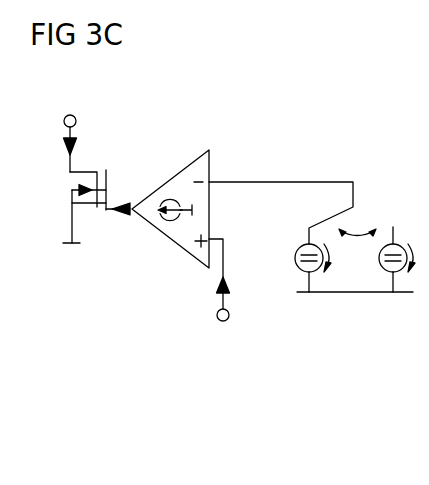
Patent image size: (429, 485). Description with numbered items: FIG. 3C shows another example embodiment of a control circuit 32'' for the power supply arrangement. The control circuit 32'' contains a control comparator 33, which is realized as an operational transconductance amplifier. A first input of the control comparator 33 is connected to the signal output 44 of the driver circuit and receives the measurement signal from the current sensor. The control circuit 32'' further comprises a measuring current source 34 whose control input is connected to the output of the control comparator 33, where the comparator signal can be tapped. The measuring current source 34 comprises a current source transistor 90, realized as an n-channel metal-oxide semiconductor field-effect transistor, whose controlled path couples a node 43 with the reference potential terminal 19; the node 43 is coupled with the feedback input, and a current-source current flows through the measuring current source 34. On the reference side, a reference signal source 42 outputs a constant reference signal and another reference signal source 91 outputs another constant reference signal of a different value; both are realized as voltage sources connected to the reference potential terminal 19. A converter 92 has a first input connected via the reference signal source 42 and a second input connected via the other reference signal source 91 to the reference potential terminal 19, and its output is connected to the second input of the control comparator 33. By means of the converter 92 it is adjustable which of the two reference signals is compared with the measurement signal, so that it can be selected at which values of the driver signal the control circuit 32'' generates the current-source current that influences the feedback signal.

The reference potential terminal 19 is at (66, 250).
The control circuit 32'' is at (189, 168).
The control comparator 33 is at (183, 172).
The measuring current source 34 is at (125, 128).
The reference signal source 42 is at (298, 250).
The node 43 is at (64, 115).
The signal output 44 is at (217, 313).
The current source transistor 90 is at (78, 170).
The other reference signal source 91 is at (398, 241).
The converter 92 is at (324, 219).